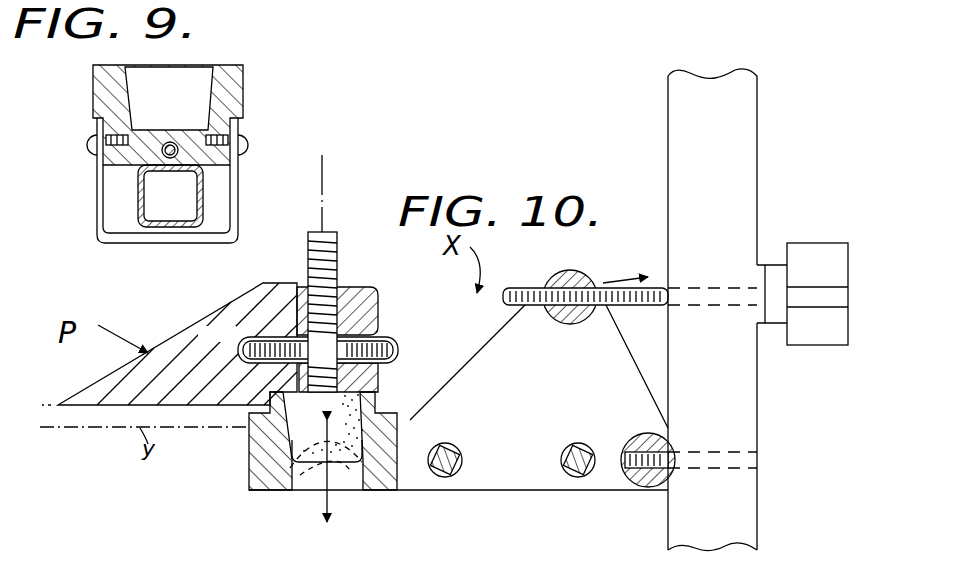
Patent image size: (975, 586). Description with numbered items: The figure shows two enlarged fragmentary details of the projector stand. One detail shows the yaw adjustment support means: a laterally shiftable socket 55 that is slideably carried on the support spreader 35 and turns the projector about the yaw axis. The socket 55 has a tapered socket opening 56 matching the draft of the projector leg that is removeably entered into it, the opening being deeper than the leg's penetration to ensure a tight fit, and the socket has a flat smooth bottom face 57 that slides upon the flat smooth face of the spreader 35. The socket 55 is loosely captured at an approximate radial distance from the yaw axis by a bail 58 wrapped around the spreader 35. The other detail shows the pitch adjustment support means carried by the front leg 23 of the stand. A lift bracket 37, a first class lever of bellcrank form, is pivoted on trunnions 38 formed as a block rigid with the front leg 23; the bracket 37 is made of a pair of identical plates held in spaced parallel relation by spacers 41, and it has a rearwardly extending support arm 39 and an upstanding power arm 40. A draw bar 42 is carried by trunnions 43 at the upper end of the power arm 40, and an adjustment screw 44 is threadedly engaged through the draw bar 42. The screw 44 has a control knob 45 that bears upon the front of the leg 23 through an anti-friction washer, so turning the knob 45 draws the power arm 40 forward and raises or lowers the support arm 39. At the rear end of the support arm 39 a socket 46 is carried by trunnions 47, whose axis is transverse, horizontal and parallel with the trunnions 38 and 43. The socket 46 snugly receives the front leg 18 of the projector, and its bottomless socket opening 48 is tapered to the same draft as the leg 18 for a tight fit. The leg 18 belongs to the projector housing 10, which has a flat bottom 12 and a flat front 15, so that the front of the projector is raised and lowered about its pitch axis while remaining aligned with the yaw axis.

In FIG. 9, the laterally shiftable socket 55 is at (247, 85).
In FIG. 9, the socket opening 56 is at (205, 78).
In FIG. 9, the flat smooth bottom face 57 is at (115, 170).
In FIG. 9, the bail 58 is at (108, 243).
In FIG. 9, the support spreader 35 is at (207, 193).
In FIG. 10, the front side 15 is at (379, 310).
In FIG. 10, the flat bottom 12 is at (81, 408).
In FIG. 10, the housing 10 is at (238, 334).
In FIG. 10, the socket 46 is at (293, 438).
In FIG. 10, the front leg 18 is at (293, 443).
In FIG. 10, the trunnions 47 is at (292, 490).
In FIG. 10, the socket opening 48 is at (353, 491).
In FIG. 10, the lift bracket 37 is at (458, 396).
In FIG. 10, the support arm 39 is at (476, 426).
In FIG. 10, the draw bar 42 is at (572, 274).
In FIG. 10, the trunnions 43 is at (530, 330).
In FIG. 10, the power arm 40 is at (606, 360).
In FIG. 10, the adjustment screw 44 is at (718, 287).
In FIG. 10, the front leg 23 is at (738, 167).
In FIG. 10, the control knob 45 is at (815, 243).
In FIG. 10, the spacers 41 is at (443, 477).
In FIG. 10, the trunnions 38 is at (636, 490).